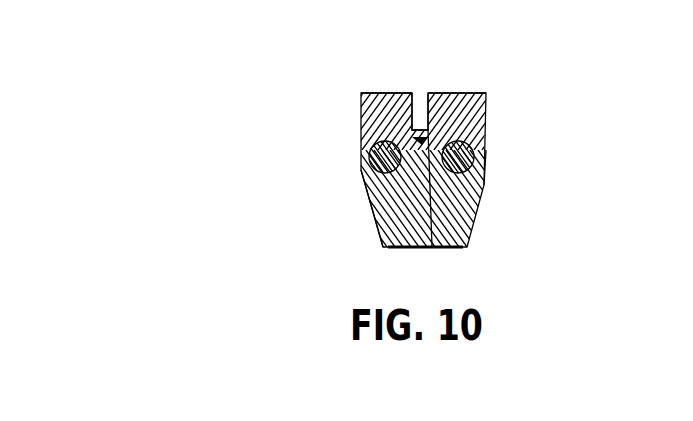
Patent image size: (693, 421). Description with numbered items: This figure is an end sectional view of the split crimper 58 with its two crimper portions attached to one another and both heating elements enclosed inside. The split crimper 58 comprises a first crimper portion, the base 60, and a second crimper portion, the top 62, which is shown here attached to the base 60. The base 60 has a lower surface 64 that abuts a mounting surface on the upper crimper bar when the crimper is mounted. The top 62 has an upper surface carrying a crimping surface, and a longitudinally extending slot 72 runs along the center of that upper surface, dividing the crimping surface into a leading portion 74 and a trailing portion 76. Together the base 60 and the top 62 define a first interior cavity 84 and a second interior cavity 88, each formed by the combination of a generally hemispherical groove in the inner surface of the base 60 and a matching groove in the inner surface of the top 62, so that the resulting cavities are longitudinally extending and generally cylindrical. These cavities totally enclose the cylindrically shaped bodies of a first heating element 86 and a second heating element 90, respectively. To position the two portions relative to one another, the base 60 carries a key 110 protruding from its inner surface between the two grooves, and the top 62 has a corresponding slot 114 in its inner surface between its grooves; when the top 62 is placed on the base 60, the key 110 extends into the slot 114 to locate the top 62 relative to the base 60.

The split crimper 58 is at (220, 104).
The base 60 is at (483, 207).
The top 62 is at (487, 120).
The lower surface 64 is at (412, 248).
The slot 72 is at (425, 92).
The leading portion 74 is at (460, 90).
The trailing portion 76 is at (392, 92).
The first interior cavity 84 is at (358, 177).
The first heating element 86 is at (353, 147).
The second interior cavity 88 is at (474, 153).
The second heating element 90 is at (483, 176).
The first key 110 is at (432, 248).
The first slot 114 is at (433, 143).